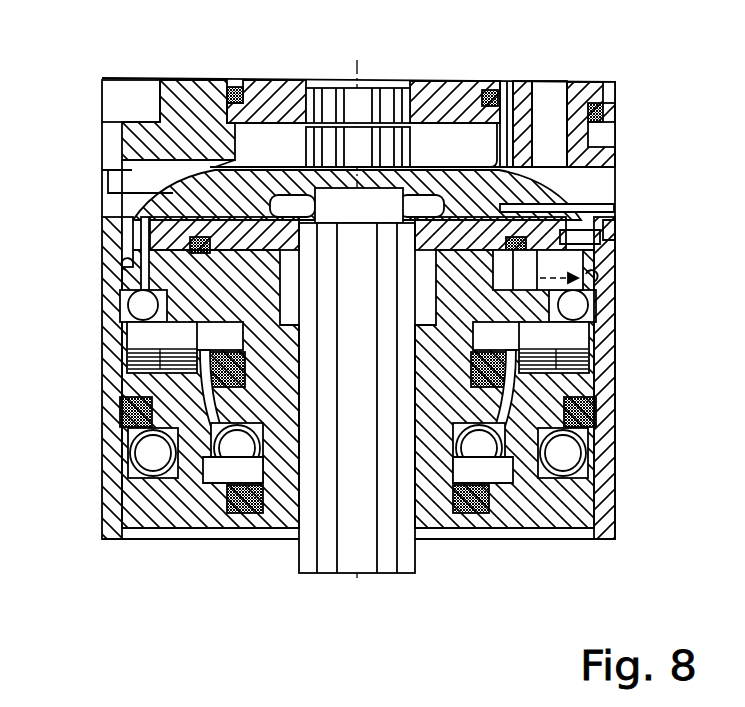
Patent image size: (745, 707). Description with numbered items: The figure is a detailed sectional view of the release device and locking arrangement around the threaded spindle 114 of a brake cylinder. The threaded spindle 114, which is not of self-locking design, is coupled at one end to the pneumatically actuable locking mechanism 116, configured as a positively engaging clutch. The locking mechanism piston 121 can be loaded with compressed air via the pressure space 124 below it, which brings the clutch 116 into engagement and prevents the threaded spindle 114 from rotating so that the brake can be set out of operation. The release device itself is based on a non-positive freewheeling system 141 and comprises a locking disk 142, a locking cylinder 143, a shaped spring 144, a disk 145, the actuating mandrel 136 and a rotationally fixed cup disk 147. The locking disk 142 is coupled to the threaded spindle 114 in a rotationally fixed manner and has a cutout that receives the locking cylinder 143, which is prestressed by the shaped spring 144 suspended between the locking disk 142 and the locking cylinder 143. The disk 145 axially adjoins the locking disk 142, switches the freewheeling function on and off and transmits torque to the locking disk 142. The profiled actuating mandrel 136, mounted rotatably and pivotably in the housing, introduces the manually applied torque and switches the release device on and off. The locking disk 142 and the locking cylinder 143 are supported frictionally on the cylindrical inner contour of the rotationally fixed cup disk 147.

The threaded spindle 114 is at (438, 527).
The locking mechanism 116 is at (115, 352).
The locking mechanism piston 121 is at (607, 403).
The pressure space 124 is at (118, 398).
The actuating mandrel 136 is at (380, 196).
The freewheeling system 141 is at (613, 252).
The locking disk 142 is at (600, 356).
The locking cylinder 143 is at (600, 292).
The shaped spring 144 is at (612, 240).
The disk 145 is at (612, 210).
The cup disk 147 is at (585, 190).